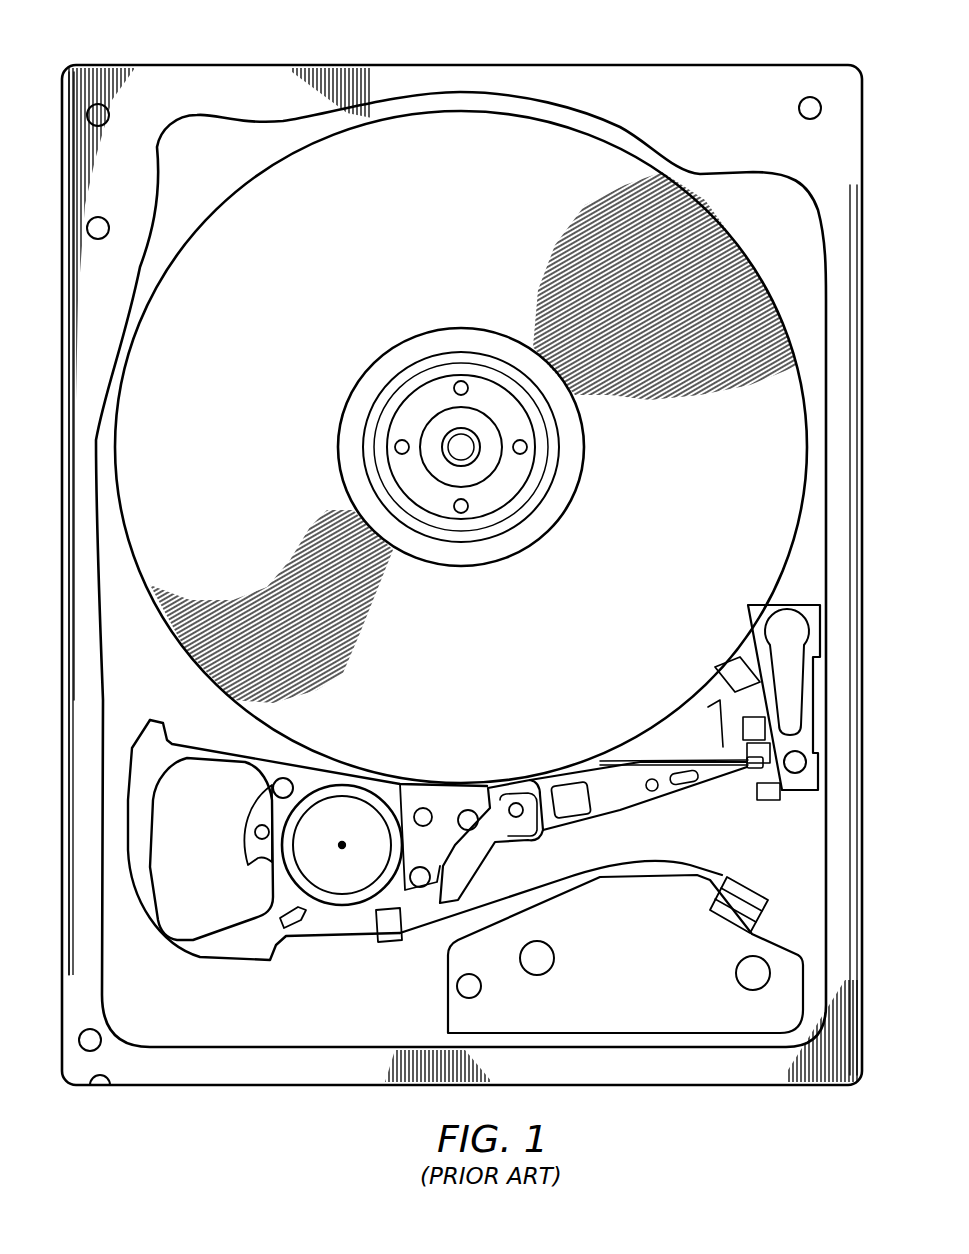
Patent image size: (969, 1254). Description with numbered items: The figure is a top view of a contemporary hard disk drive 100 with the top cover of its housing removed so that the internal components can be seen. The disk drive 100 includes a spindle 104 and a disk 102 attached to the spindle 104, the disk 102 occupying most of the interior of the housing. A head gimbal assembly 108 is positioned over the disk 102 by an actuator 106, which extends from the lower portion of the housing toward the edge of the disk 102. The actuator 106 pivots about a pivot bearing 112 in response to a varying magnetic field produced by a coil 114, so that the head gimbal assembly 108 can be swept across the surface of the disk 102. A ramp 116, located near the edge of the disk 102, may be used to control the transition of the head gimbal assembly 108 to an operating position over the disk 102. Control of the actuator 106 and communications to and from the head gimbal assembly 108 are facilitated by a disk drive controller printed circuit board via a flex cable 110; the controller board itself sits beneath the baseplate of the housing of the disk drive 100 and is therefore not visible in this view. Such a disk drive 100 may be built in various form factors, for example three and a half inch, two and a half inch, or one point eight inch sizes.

The hard disk drive 100 is at (624, 62).
The disk 102 is at (486, 236).
The spindle 104 is at (428, 405).
The actuator 106 is at (510, 780).
The head gimbal assembly 108 is at (683, 757).
The flex cable 110 is at (705, 858).
The pivot bearing 112 is at (332, 875).
The coil 114 is at (200, 958).
The ramp 116 is at (730, 662).